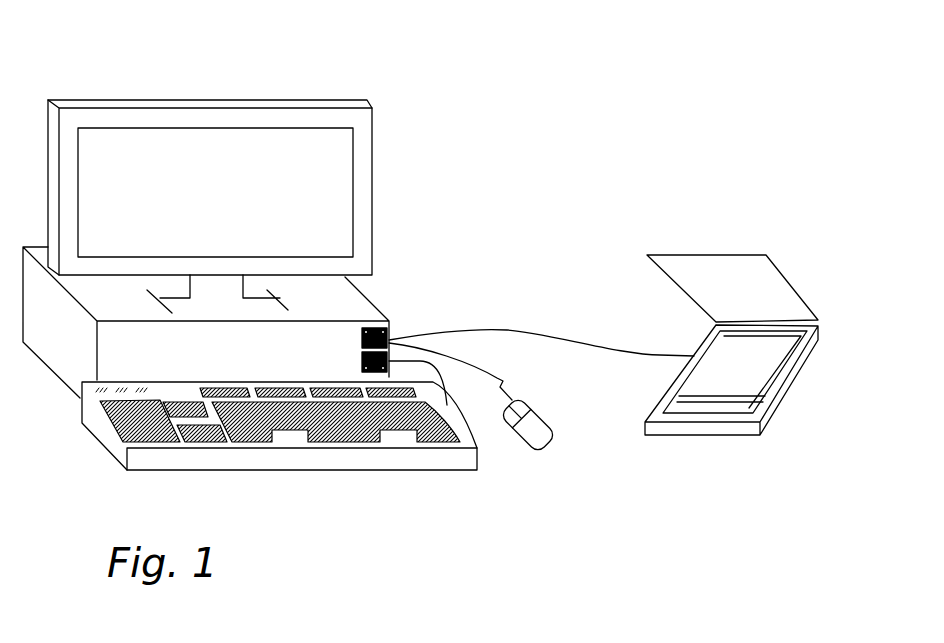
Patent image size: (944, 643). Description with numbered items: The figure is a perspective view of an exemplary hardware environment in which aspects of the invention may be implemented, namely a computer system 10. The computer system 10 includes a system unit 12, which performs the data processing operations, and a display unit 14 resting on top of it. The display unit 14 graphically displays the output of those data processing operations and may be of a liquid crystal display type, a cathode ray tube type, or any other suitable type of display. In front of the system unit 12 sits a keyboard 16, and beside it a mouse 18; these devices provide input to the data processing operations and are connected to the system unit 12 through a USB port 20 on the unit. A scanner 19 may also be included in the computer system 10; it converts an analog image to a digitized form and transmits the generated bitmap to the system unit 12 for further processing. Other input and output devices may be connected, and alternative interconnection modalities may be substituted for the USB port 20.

The computer system 10 is at (360, 60).
The system unit 12 is at (348, 291).
The display unit 14 is at (370, 159).
The keyboard 16 is at (362, 470).
The mouse 18 is at (543, 406).
The scanner 19 is at (770, 363).
The USB port 20 is at (392, 328).